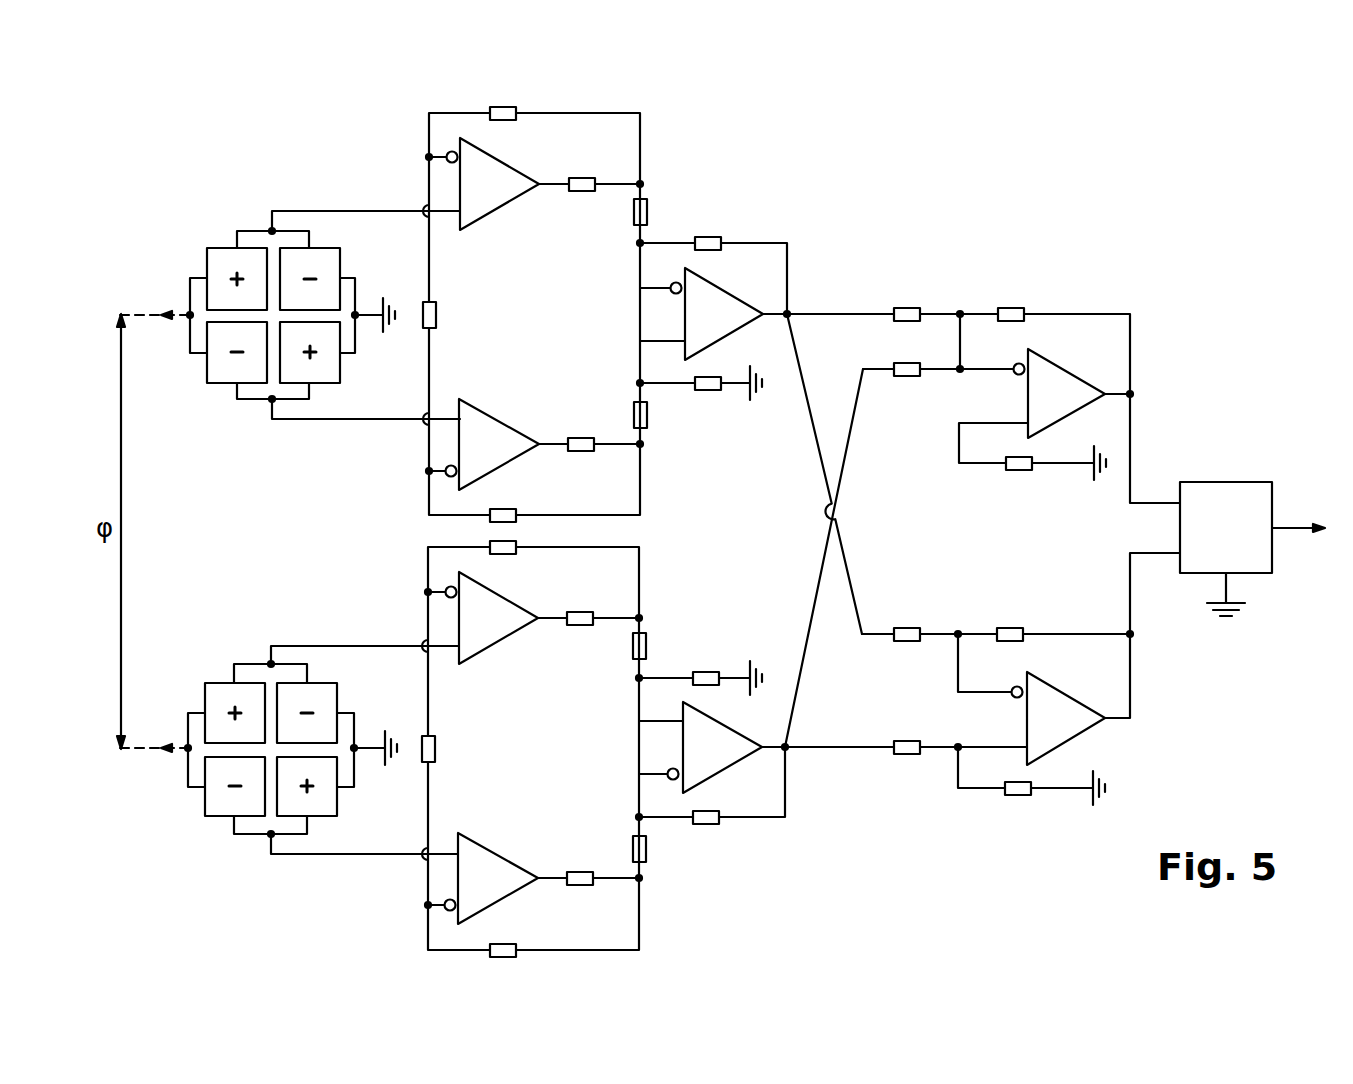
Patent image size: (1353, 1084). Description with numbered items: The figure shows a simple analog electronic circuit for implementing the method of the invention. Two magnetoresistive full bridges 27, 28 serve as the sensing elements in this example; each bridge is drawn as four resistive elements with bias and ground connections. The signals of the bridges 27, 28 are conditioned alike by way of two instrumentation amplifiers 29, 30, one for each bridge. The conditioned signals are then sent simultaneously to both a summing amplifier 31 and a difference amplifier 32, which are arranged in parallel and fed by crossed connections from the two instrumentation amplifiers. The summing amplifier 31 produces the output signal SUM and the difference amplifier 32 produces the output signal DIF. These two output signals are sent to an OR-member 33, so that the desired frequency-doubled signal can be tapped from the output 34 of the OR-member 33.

The magnetoresistive full bridge 27 is at (220, 228).
The magnetoresistive full bridge 28 is at (219, 665).
The instrumentation amplifier 29 is at (673, 225).
The instrumentation amplifier 30 is at (673, 660).
The summing amplifier 31 is at (985, 303).
The difference amplifier 32 is at (985, 625).
The OR-member 33 is at (1226, 470).
The output 34 is at (1301, 542).